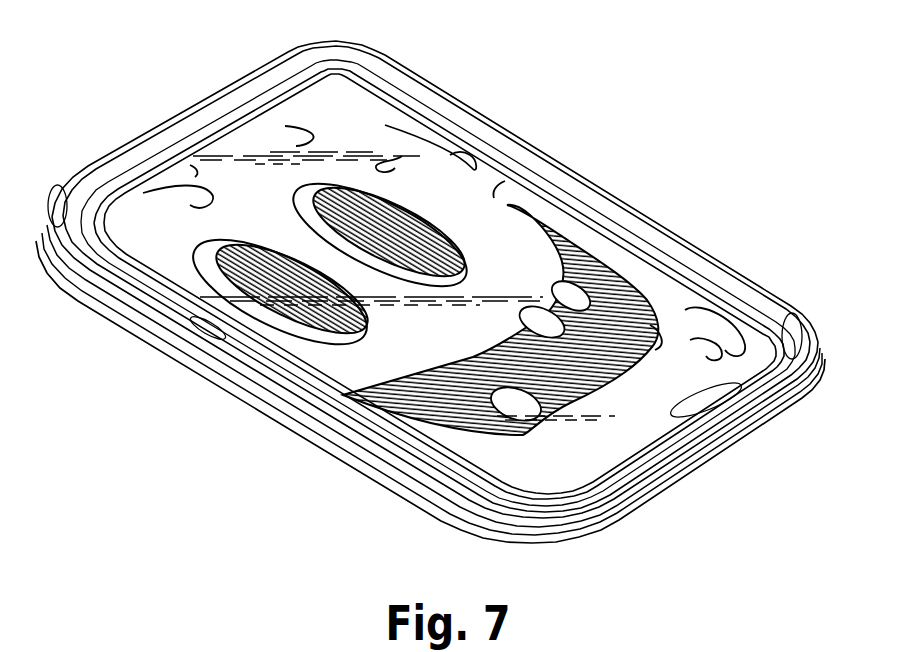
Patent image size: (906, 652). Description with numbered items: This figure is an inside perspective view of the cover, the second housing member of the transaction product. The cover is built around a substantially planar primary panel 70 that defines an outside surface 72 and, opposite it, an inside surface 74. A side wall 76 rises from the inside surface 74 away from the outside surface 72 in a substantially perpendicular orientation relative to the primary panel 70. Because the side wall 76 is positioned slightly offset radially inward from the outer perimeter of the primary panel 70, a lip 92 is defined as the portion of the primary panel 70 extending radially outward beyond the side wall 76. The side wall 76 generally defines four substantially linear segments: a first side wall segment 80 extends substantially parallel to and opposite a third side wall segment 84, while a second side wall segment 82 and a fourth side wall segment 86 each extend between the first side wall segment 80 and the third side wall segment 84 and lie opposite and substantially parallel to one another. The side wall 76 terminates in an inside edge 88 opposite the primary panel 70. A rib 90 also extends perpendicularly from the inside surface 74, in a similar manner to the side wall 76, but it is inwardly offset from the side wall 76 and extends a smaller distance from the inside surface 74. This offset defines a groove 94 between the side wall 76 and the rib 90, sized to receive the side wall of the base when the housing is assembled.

The primary panel 70 is at (352, 107).
The outside surface 72 is at (363, 463).
The inside surface 74 is at (533, 158).
The side wall 76 is at (137, 302).
The first side wall segment 80 is at (690, 255).
The second side wall segment 82 is at (597, 487).
The third side wall segment 84 is at (263, 365).
The fourth side wall segment 86 is at (112, 163).
The inside edge 88 is at (338, 43).
The rib 90 is at (789, 332).
The lip 92 is at (447, 498).
The groove 94 is at (57, 186).